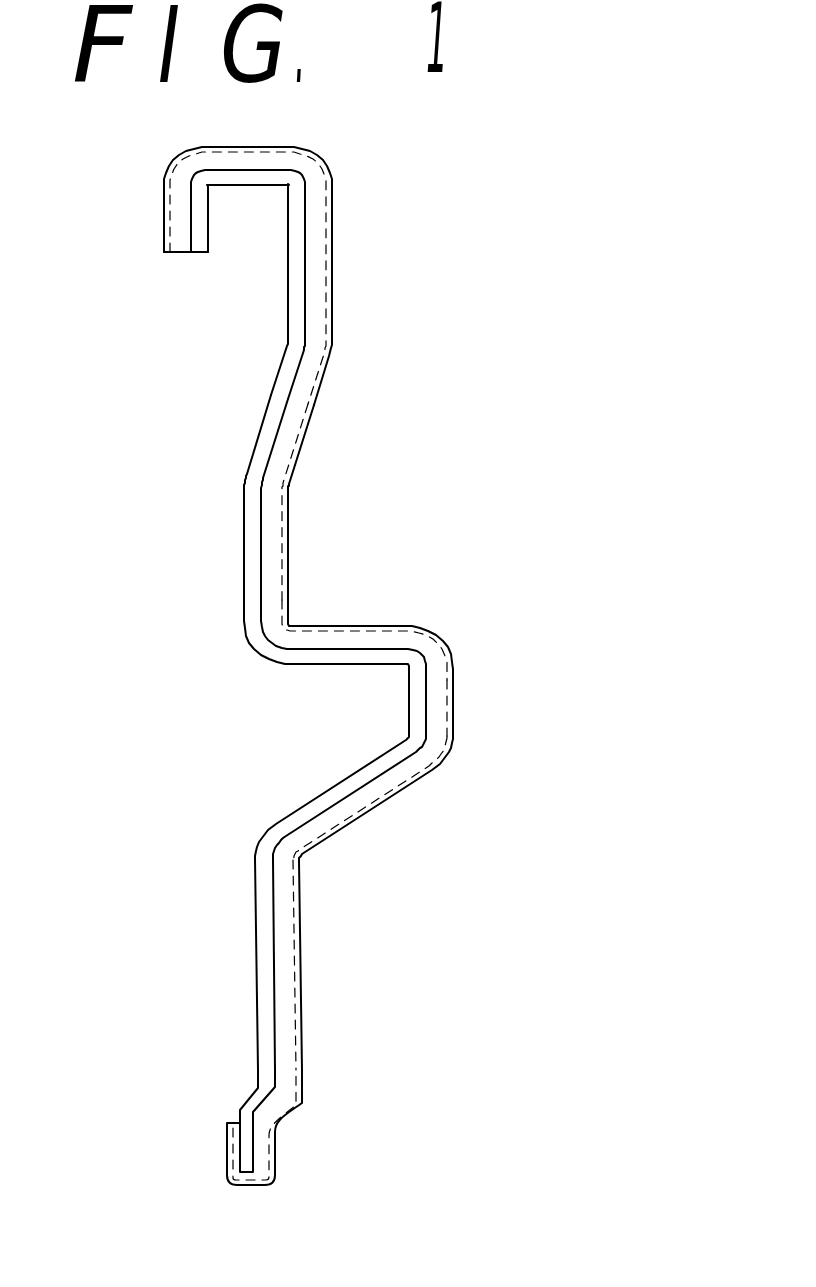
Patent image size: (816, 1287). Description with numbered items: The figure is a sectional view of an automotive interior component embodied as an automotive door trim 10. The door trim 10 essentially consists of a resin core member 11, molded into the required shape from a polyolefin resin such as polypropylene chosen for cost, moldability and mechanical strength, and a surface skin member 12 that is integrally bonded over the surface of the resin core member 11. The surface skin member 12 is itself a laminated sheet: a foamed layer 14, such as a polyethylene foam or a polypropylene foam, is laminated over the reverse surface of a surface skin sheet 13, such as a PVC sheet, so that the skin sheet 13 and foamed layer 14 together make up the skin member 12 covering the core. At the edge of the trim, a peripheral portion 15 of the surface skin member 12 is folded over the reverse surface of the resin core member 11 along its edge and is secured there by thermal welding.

The automotive door trim 10 is at (372, 675).
The resin core member 11 is at (247, 563).
The surface skin member 12 is at (494, 770).
The surface skin sheet 13 is at (452, 712).
The foamed layer 14 is at (441, 797).
The peripheral portion 15 is at (227, 1155).